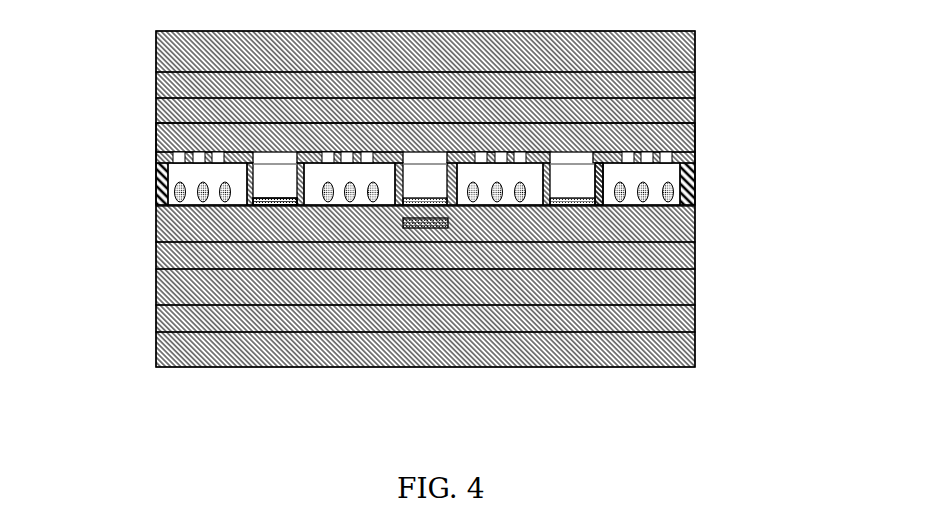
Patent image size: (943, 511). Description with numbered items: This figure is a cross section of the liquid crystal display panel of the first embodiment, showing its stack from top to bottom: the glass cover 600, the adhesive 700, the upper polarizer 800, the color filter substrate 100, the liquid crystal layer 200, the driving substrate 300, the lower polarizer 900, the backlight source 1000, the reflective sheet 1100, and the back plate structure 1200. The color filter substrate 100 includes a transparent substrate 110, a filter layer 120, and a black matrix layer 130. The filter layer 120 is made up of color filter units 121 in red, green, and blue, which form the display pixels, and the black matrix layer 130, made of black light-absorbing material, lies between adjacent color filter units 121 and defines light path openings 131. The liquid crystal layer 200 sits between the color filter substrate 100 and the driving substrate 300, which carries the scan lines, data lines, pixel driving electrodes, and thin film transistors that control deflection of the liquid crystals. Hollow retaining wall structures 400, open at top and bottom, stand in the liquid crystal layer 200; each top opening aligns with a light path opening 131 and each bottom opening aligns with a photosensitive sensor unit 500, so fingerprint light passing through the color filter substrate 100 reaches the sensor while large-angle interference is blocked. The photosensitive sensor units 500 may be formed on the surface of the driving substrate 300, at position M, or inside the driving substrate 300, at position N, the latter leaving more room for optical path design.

The color filter substrate 100 is at (831, 70).
The transparent substrate 110 is at (695, 143).
The filter layer 120 is at (767, 50).
The color filter units 121 is at (628, 152).
The black matrix layer 130 is at (694, 161).
The light path openings 131 is at (568, 155).
The liquid crystal layer 200 is at (162, 197).
The driving substrate 300 is at (173, 222).
The retaining wall structures 400 is at (603, 188).
The photosensitive sensor units 500 is at (573, 199).
The glass cover 600 is at (173, 48).
The adhesive 700 is at (173, 85).
The upper polarizer 800 is at (173, 112).
The lower polarizer 900 is at (173, 257).
The backlight source 1000 is at (173, 285).
The reflective sheet 1100 is at (173, 321).
The back plate structure 1200 is at (173, 348).
The position M is at (276, 198).
The position N is at (426, 228).